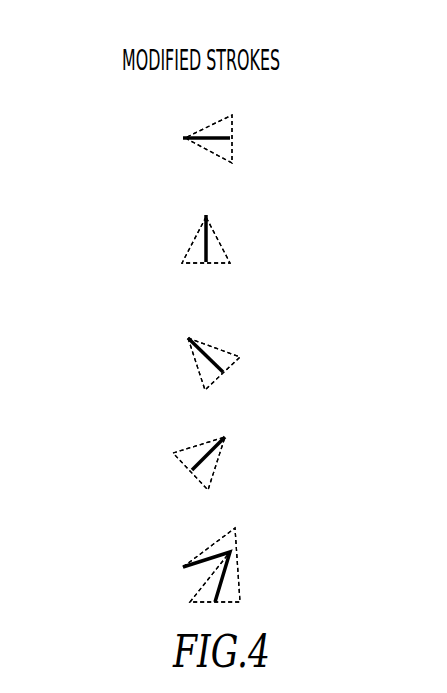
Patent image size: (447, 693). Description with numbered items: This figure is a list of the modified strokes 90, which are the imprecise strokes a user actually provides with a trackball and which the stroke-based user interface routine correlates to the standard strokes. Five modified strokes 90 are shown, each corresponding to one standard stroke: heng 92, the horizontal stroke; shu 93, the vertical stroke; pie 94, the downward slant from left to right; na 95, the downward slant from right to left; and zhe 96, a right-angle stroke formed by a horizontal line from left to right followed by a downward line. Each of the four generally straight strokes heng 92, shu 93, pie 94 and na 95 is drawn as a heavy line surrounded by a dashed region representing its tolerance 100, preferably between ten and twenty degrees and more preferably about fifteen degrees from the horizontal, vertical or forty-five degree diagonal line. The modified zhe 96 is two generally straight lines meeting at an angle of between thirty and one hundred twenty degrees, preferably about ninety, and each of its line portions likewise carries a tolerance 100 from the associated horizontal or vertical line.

The modified strokes 90 is at (107, 117).
The heng 92 is at (168, 142).
The shu 93 is at (178, 242).
The pie 94 is at (180, 362).
The na 95 is at (167, 470).
The zhe 96 is at (187, 577).
The tolerance 100 is at (232, 128).